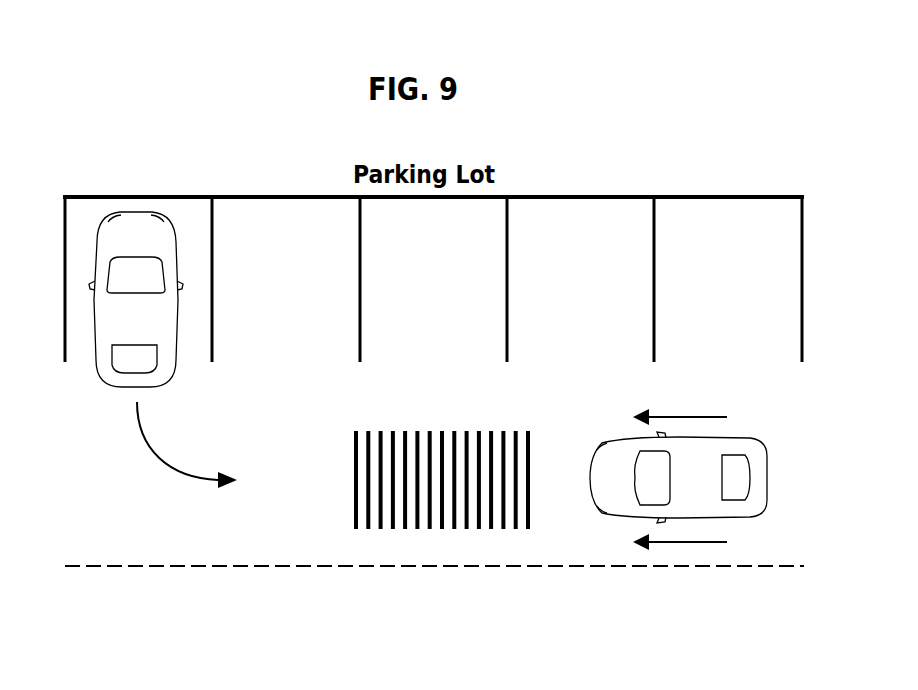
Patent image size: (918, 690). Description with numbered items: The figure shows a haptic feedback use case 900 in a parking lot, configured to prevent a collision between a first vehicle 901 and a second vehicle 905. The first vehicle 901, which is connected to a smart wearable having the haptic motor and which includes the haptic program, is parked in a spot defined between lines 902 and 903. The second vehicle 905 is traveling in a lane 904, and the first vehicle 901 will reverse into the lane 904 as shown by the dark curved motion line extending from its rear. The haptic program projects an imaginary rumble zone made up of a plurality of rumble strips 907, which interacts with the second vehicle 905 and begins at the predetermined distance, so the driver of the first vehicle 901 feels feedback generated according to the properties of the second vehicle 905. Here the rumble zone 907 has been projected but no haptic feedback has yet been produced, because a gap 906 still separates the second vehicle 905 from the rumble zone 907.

The parking lot scene 900 is at (772, 125).
The first vehicle 901 is at (137, 212).
The line 902 is at (65, 334).
The line 903 is at (212, 334).
The lane 904 is at (143, 568).
The second vehicle 905 is at (750, 512).
The gap 906 is at (561, 540).
The rumble strips 907 is at (406, 548).